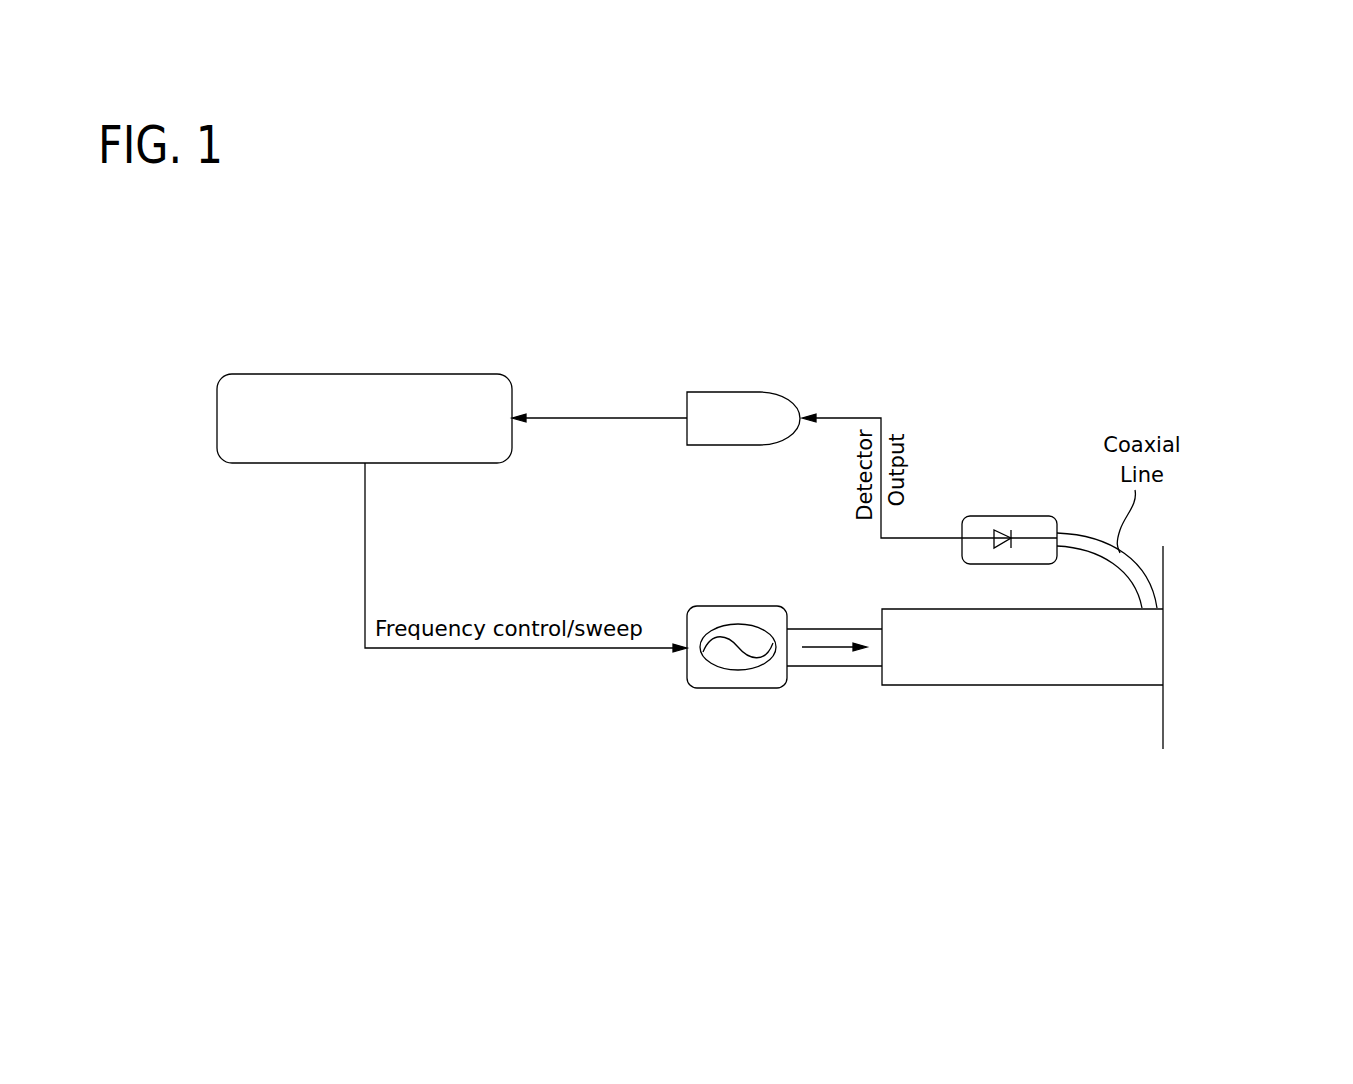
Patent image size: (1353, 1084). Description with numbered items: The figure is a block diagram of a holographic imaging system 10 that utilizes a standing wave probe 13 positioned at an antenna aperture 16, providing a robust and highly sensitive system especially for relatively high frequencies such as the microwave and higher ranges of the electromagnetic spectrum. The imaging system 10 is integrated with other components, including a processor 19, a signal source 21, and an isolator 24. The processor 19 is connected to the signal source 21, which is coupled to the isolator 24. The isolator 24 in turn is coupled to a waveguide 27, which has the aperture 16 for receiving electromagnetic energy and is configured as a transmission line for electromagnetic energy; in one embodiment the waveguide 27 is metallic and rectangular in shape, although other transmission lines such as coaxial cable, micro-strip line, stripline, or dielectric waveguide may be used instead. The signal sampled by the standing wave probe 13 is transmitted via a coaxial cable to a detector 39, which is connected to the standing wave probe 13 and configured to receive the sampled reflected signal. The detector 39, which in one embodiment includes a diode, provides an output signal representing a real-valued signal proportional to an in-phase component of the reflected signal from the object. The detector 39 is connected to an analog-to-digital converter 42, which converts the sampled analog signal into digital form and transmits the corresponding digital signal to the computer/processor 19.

The holographic imaging system 10 is at (843, 298).
The standing wave probe 13 is at (1150, 612).
The antenna aperture 16 is at (1175, 655).
The processor 19 is at (363, 374).
The signal source 21 is at (740, 688).
The isolator 24 is at (832, 667).
The waveguide 27 is at (1022, 685).
The detector 39 is at (1003, 516).
The analog-to-digital converter 42 is at (721, 392).